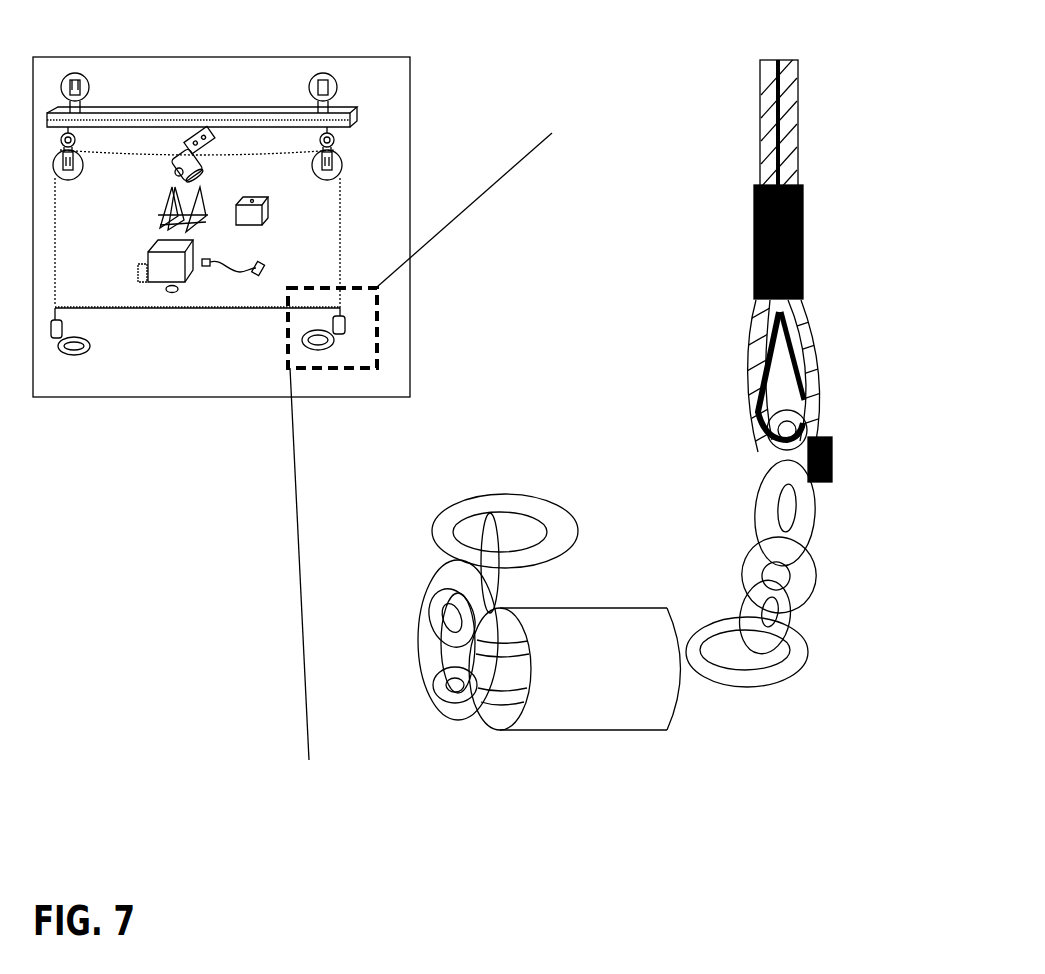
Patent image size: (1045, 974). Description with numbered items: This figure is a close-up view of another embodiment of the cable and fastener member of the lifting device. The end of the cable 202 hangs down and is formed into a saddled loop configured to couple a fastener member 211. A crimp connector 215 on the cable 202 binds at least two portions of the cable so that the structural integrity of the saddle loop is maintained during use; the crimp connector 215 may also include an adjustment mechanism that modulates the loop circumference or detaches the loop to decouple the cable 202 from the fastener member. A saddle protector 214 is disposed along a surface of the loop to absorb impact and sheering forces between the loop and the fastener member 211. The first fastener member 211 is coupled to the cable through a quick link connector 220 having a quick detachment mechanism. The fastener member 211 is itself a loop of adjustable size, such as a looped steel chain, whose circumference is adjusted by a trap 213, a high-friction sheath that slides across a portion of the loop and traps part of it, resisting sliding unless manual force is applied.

The second end of the cable 202 is at (765, 110).
The crimp connector 215 is at (722, 226).
The saddle protector 214 is at (760, 413).
The quick link connector 220 is at (840, 415).
The first fastener member 211 is at (438, 710).
The trap 213 is at (620, 697).